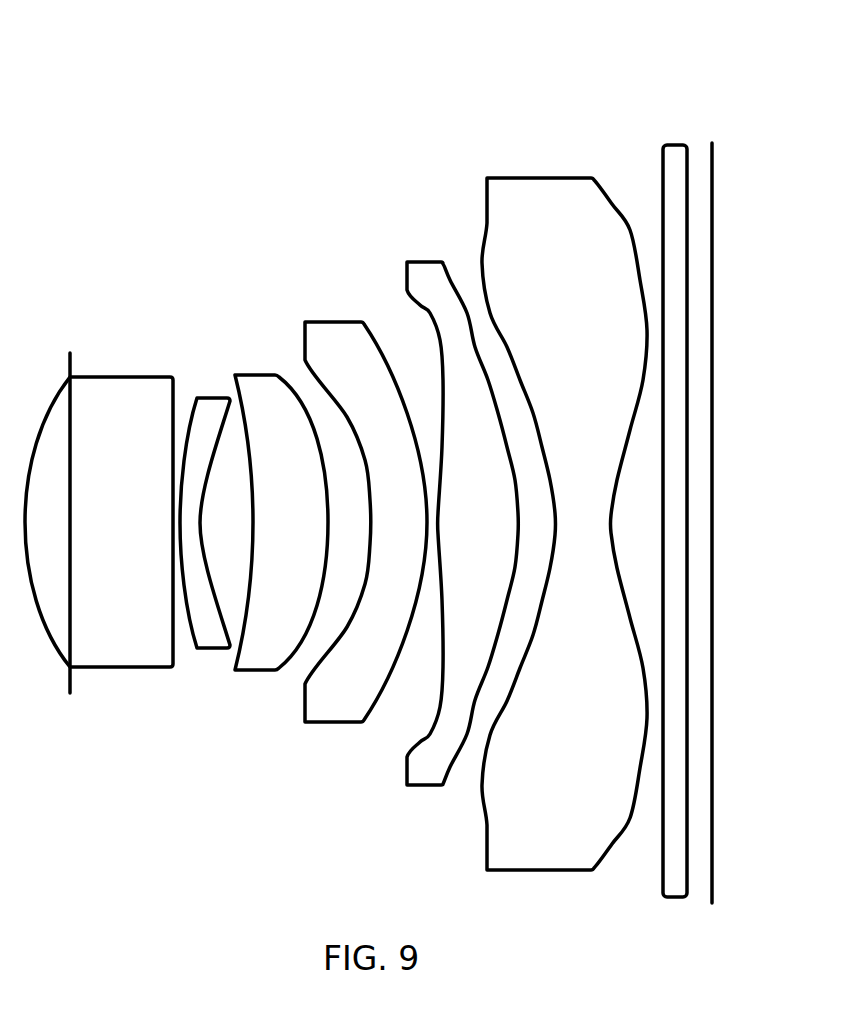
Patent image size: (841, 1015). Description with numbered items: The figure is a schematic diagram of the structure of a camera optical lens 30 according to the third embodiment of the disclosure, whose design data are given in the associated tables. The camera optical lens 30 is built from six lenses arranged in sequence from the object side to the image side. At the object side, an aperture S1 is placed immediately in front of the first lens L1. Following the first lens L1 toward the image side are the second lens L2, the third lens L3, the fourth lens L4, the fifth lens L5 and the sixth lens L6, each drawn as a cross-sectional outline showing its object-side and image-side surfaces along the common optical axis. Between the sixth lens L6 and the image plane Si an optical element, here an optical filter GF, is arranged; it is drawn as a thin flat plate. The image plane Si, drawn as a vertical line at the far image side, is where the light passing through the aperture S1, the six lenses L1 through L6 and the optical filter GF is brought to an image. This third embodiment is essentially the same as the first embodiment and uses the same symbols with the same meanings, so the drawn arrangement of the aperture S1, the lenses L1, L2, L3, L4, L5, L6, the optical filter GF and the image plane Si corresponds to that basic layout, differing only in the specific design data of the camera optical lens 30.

The camera optical lens 30 is at (363, 48).
The aperture S1 is at (51, 520).
The first lens L1 is at (99, 506).
The second lens L2 is at (205, 506).
The third lens L3 is at (281, 503).
The fourth lens L4 is at (366, 507).
The fifth lens L5 is at (462, 506).
The sixth lens L6 is at (564, 507).
The optical filter GF is at (677, 507).
The image plane Si is at (713, 507).